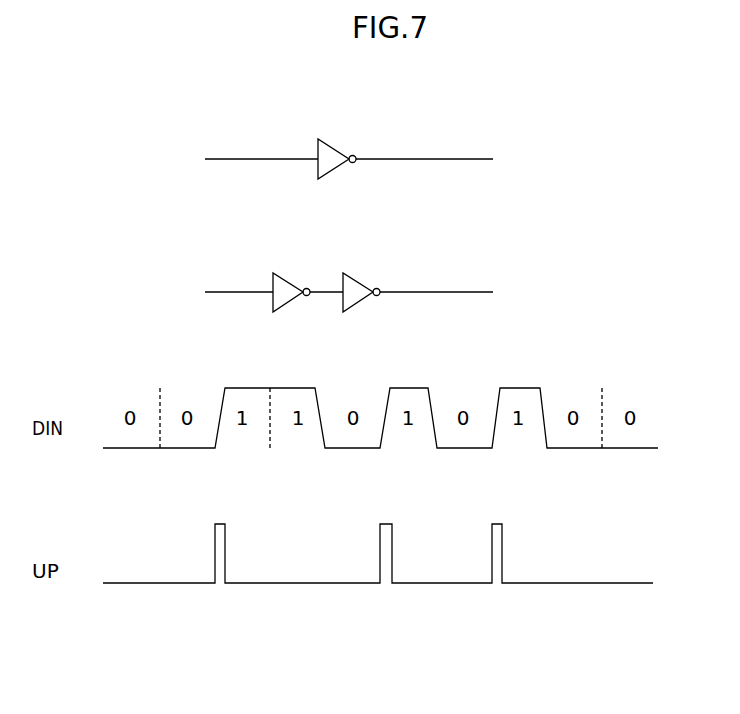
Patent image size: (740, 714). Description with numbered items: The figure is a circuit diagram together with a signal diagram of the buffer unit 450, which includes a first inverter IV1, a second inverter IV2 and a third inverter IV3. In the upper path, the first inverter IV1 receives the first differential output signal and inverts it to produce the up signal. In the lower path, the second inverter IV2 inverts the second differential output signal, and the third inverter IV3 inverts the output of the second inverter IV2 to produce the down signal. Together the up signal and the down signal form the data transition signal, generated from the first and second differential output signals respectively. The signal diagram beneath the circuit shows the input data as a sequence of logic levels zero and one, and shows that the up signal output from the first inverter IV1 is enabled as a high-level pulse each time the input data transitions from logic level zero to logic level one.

The buffer unit 450 is at (219, 92).
The first inverter IV1 is at (337, 145).
The second inverter IV2 is at (291, 276).
The third inverter IV3 is at (361, 276).